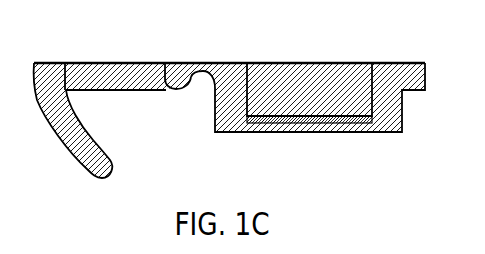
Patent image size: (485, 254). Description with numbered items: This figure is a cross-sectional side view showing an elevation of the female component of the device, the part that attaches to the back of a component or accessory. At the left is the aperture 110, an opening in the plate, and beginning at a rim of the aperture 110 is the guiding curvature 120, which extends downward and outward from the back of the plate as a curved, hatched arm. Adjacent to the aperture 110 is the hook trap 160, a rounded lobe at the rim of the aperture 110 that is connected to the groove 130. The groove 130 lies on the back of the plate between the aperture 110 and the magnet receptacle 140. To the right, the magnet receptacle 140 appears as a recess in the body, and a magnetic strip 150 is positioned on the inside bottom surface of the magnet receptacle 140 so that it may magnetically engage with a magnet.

The aperture 110 is at (88, 77).
The guiding curvature 120 is at (92, 140).
The groove 130 is at (200, 75).
The magnet receptacle 140 is at (310, 75).
The magnetic strip 150 is at (290, 116).
The hook trap 160 is at (160, 64).